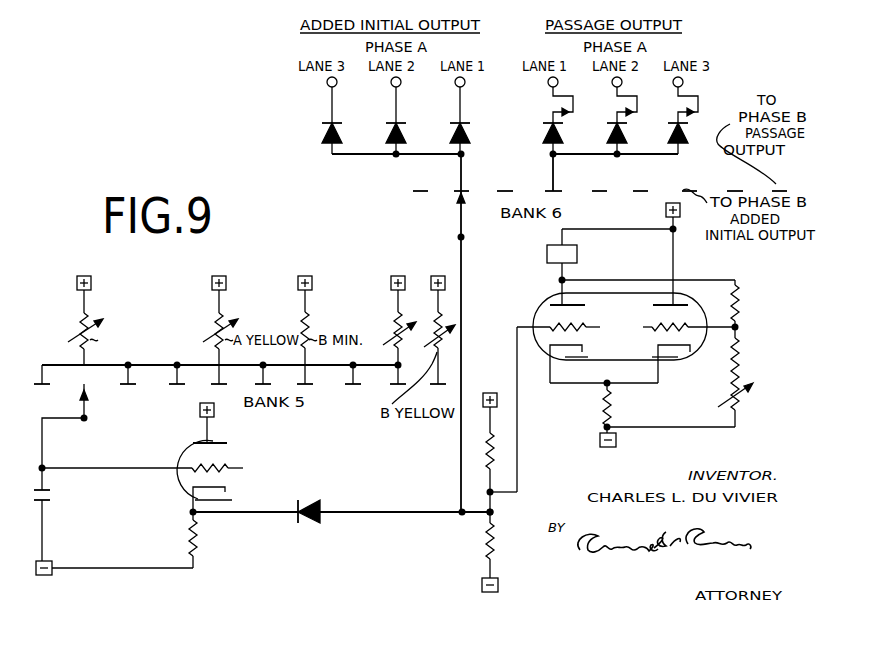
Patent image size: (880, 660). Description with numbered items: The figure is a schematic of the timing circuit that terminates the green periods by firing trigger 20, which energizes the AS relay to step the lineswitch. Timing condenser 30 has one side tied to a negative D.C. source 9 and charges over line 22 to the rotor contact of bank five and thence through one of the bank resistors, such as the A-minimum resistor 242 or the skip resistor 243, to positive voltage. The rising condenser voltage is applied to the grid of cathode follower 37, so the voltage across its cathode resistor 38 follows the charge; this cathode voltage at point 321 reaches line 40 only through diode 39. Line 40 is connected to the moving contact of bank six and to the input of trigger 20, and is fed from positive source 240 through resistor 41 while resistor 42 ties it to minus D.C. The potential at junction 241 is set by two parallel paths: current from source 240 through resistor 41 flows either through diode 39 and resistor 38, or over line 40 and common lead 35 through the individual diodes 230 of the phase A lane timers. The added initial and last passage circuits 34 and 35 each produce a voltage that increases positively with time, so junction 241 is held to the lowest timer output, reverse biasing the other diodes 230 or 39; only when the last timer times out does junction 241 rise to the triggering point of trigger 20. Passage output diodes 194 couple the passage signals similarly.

The diode 230 is at (323, 136).
The common lead 35 is at (389, 158).
The diode 194 is at (544, 136).
The last passage circuit 34 is at (578, 158).
The trigger 20 is at (628, 335).
The resistor 242 is at (90, 322).
The variable resistor 243 is at (398, 313).
The source 240 is at (482, 393).
The resistor 41 is at (493, 461).
The line 40 is at (83, 467).
The junction 241 is at (487, 515).
The resistor 42 is at (487, 543).
The line 22 is at (52, 434).
The condenser 30 is at (55, 494).
The negative D.C. source 9 is at (48, 556).
The cathode follower 37 is at (186, 445).
The resistor 38 is at (184, 538).
The point 321 is at (197, 517).
The diode 39 is at (306, 499).